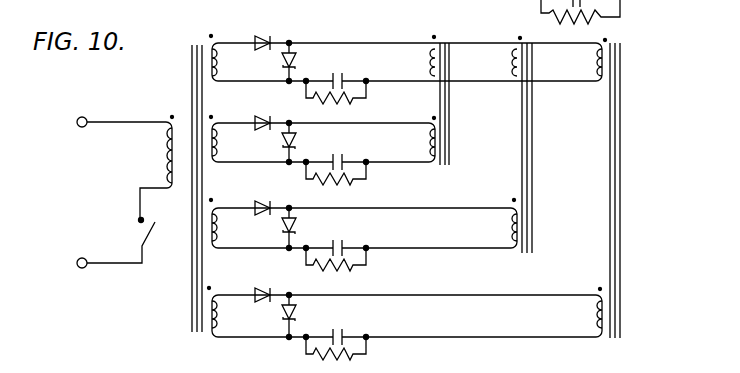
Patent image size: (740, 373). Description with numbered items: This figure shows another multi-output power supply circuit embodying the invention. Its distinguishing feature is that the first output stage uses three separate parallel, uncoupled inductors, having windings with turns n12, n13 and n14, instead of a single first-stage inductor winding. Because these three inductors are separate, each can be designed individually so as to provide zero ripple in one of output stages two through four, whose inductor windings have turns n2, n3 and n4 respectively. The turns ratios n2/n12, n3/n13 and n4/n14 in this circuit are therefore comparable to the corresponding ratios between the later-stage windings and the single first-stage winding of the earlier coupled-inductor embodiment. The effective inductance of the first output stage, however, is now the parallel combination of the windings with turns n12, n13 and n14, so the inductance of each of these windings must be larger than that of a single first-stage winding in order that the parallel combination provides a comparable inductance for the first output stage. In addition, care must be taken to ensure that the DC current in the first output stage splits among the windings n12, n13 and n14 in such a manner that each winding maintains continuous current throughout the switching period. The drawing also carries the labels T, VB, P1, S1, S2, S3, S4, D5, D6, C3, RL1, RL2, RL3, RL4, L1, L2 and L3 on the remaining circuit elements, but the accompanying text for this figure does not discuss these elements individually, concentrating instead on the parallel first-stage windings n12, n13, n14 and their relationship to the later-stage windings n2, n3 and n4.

The transformer T is at (196, 201).
The supply voltage VB is at (77, 192).
The primary winding P1 is at (163, 152).
The secondary winding S1 is at (236, 65).
The secondary winding S2 is at (220, 146).
The secondary winding S3 is at (220, 232).
The secondary winding S4 is at (220, 318).
The diode D5 is at (259, 37).
The zener diode D6 is at (298, 61).
The capacitor C3 is at (344, 78).
The load resistor RL1 is at (355, 96).
The load resistor RL2 is at (356, 178).
The load resistor RL3 is at (358, 268).
The load resistor RL4 is at (350, 346).
The parallel inductor winding n12 is at (422, 71).
The parallel inductor winding n13 is at (508, 70).
The parallel inductor winding n14 is at (596, 70).
The second output stage winding turns n2 is at (422, 152).
The third output stage winding turns n3 is at (508, 236).
The fourth output stage winding turns n4 is at (596, 326).
The inductor core L1 is at (448, 117).
The inductor core L2 is at (526, 162).
The inductor core L3 is at (614, 203).